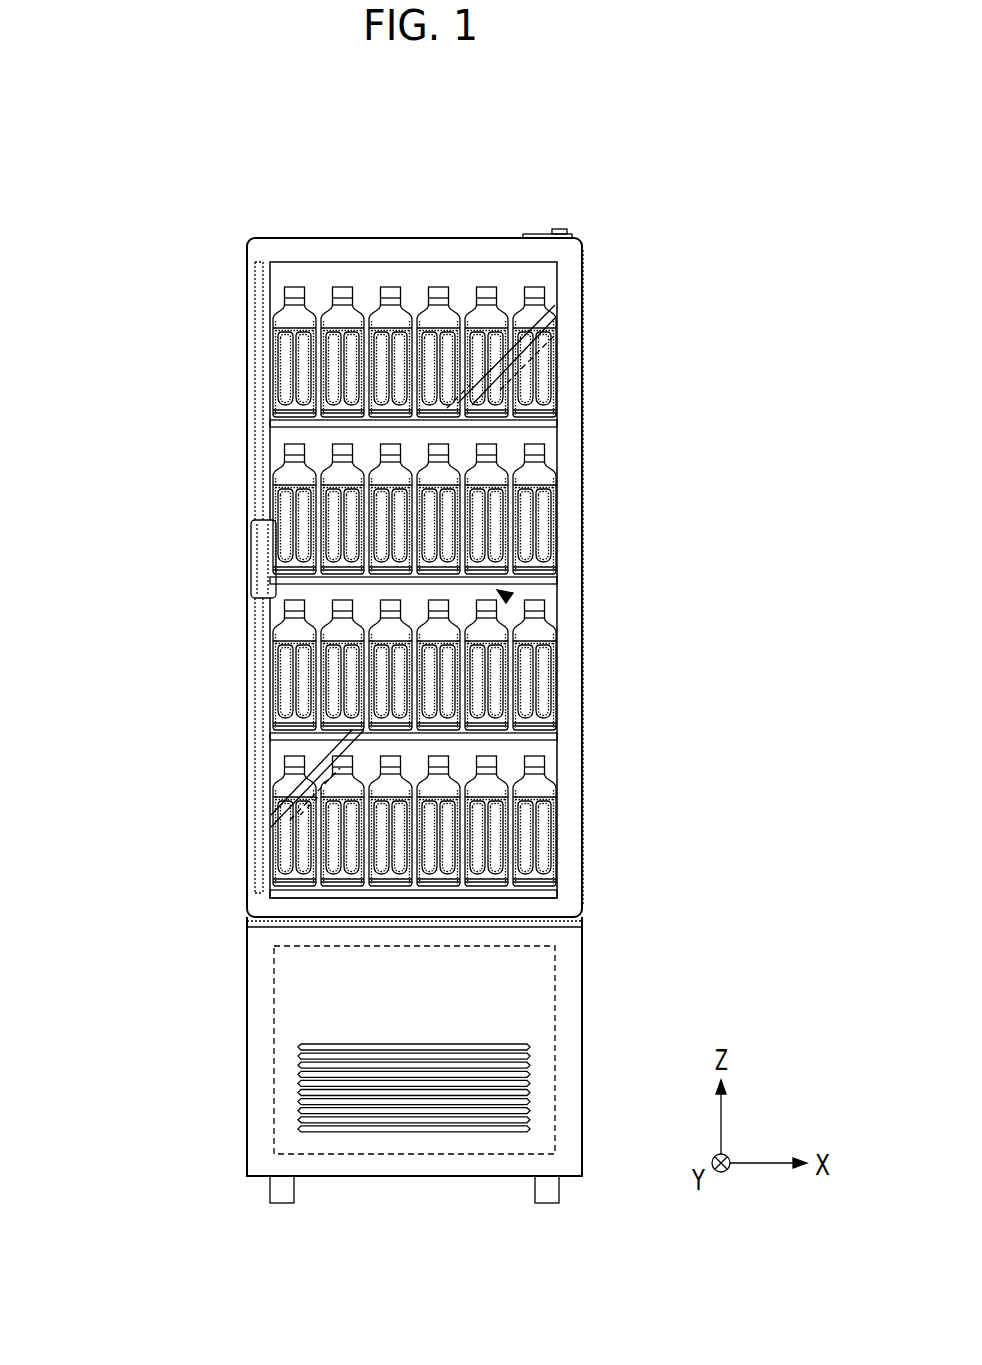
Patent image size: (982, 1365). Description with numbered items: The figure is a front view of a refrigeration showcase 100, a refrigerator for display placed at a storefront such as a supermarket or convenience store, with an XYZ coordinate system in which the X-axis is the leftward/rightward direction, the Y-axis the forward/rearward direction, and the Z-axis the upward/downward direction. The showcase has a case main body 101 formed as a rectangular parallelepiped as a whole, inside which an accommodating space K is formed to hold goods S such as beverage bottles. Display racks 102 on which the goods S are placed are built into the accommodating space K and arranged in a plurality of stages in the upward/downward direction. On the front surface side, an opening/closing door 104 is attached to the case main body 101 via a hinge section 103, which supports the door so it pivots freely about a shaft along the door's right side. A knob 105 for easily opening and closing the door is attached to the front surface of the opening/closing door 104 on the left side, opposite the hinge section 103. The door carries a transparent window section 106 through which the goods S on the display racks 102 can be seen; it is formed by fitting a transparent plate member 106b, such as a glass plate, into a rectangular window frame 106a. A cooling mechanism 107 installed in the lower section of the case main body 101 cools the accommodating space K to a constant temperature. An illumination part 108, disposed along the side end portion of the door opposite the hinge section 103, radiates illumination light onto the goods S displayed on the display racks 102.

The refrigeration showcase 100 is at (492, 180).
The case main body 101 is at (244, 323).
The display racks 102 is at (553, 440).
The hinge section 103 is at (562, 231).
The opening/closing door 104 is at (244, 621).
The knob 105 is at (251, 538).
The window section 106 is at (118, 655).
The window frame 106a is at (256, 683).
The transparent plate member 106b is at (310, 755).
The cooling mechanism 107 is at (274, 1033).
The illumination part 108 is at (252, 382).
The goods S is at (547, 366).
The accommodating space K is at (508, 596).